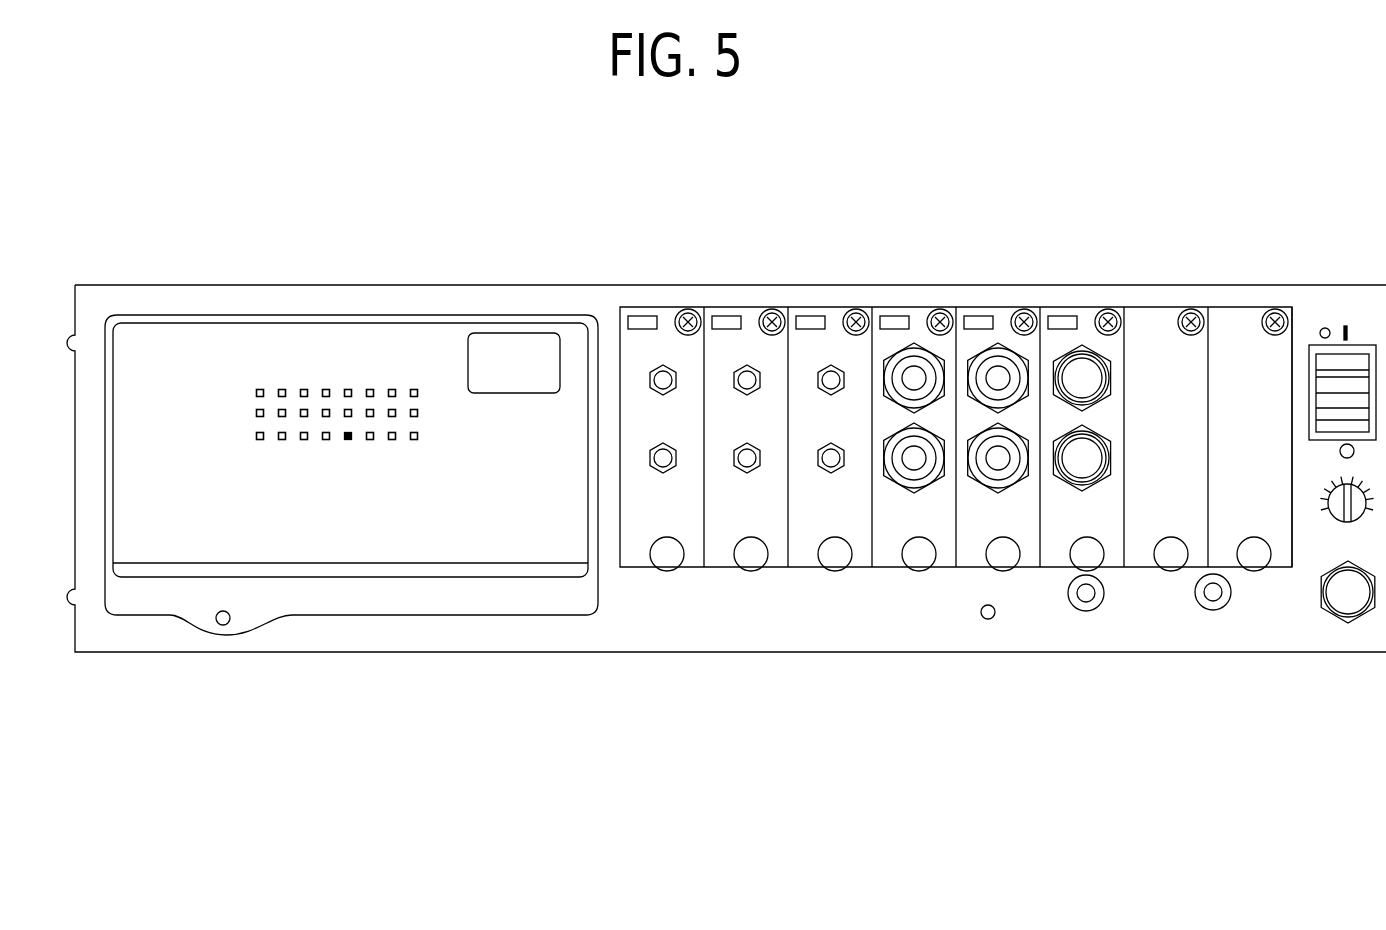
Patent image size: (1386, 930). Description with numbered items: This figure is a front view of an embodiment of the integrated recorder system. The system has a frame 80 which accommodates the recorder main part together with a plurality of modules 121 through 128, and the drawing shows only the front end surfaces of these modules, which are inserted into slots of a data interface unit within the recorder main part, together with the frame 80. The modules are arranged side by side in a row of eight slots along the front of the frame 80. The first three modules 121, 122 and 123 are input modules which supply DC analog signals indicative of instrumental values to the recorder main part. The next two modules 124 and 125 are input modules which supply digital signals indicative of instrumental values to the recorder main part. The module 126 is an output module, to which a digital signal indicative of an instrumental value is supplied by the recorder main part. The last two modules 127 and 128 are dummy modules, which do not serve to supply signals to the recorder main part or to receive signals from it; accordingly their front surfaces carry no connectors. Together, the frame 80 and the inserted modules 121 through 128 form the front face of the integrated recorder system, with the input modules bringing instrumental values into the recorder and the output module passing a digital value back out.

The frame 80 is at (528, 270).
The input module 121 is at (672, 335).
The input module 122 is at (755, 338).
The input module 123 is at (838, 340).
The input module 124 is at (915, 333).
The input module 125 is at (1003, 338).
The output module 126 is at (1088, 338).
The dummy module 127 is at (1160, 340).
The dummy module 128 is at (1245, 338).